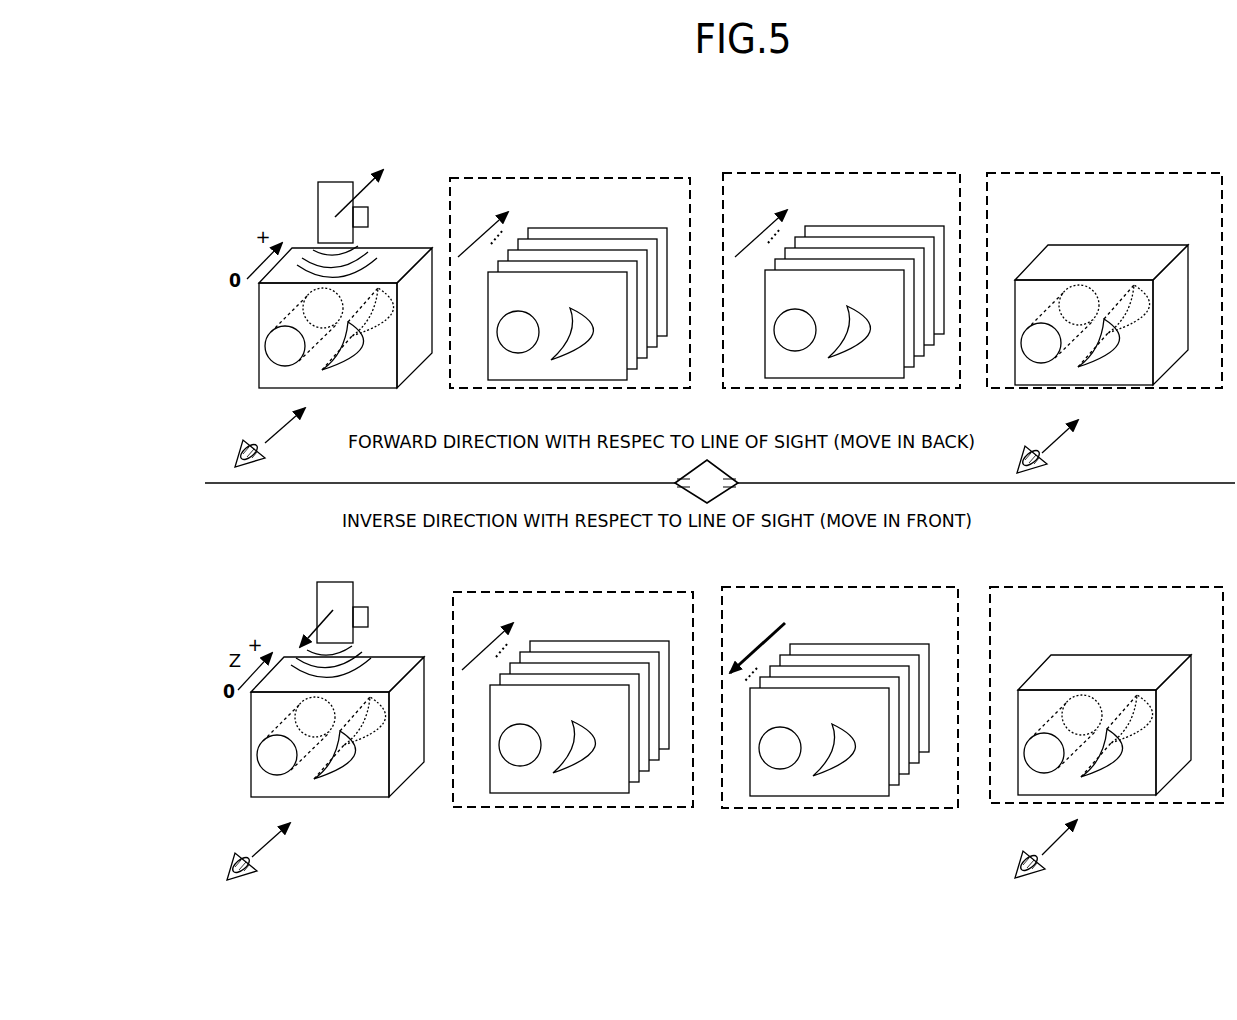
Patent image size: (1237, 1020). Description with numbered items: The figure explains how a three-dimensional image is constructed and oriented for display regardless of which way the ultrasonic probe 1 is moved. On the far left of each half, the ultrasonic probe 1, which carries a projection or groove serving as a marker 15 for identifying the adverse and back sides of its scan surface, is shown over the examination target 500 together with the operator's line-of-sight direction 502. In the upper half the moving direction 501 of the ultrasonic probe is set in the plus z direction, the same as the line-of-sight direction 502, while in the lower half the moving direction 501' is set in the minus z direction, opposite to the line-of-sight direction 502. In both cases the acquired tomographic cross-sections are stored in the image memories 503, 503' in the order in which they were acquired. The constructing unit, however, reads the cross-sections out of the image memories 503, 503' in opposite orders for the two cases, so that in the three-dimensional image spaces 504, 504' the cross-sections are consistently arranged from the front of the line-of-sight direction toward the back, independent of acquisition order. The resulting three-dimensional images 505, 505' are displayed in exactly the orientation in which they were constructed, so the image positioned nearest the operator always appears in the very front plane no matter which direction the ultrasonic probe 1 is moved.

The ultrasonic probe 1 is at (318, 189).
The marker 15 is at (368, 217).
The examination target 500 is at (262, 355).
The moving direction of the ultrasonic probe 501 is at (357, 175).
The moving direction of the ultrasonic probe 501' is at (286, 617).
The line-of-sight direction 502 is at (282, 422).
The image memory 503 is at (562, 259).
The image memory 503' is at (555, 678).
The 3-dimensional image space 504 is at (835, 256).
The 3-dimensional image space 504' is at (821, 680).
The 3-dimensional image 505 is at (1090, 256).
The 3-dimensional image 505' is at (1085, 676).